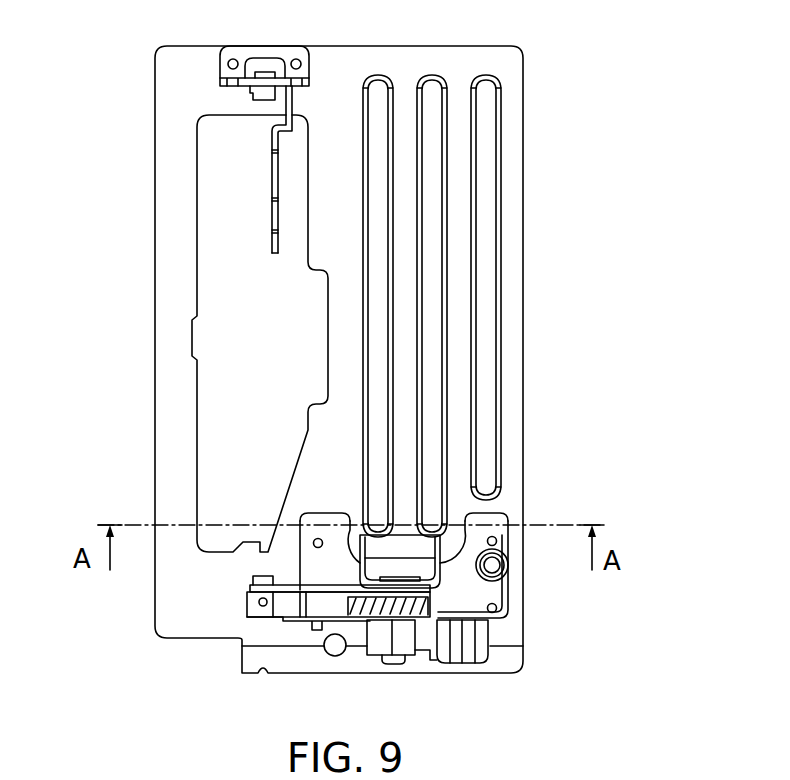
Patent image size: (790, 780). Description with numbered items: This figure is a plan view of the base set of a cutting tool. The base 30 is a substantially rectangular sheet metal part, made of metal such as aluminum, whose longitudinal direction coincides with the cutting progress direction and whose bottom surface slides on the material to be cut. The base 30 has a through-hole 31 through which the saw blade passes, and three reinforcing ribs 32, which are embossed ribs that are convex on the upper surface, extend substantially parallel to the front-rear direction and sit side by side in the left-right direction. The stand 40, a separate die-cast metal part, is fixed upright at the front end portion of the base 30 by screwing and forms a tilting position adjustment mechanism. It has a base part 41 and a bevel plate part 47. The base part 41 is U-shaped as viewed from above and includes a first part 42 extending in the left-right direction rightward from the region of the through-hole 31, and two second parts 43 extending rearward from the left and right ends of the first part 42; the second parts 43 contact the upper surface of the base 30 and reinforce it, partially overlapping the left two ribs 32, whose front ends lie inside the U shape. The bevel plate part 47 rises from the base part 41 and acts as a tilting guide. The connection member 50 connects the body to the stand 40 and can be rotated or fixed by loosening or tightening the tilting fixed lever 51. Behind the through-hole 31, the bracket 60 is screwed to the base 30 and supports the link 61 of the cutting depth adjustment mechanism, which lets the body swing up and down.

The base 30 is at (156, 639).
The through-hole 31 is at (208, 330).
The reinforcing rib 32 is at (376, 183).
The stand 40 is at (248, 620).
The base part 41 is at (514, 518).
The first part 42 is at (425, 570).
The second part 43 is at (321, 517).
The bevel plate part 47 is at (337, 657).
The connection member 50 is at (435, 583).
The tilting fixed lever 51 is at (478, 655).
The bracket 60 is at (232, 52).
The link 61 is at (274, 183).